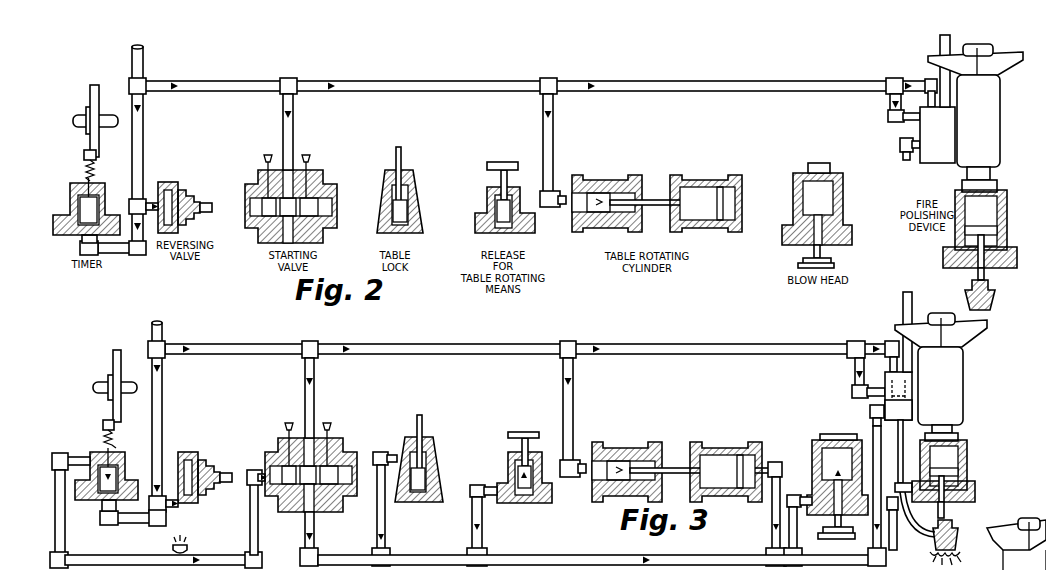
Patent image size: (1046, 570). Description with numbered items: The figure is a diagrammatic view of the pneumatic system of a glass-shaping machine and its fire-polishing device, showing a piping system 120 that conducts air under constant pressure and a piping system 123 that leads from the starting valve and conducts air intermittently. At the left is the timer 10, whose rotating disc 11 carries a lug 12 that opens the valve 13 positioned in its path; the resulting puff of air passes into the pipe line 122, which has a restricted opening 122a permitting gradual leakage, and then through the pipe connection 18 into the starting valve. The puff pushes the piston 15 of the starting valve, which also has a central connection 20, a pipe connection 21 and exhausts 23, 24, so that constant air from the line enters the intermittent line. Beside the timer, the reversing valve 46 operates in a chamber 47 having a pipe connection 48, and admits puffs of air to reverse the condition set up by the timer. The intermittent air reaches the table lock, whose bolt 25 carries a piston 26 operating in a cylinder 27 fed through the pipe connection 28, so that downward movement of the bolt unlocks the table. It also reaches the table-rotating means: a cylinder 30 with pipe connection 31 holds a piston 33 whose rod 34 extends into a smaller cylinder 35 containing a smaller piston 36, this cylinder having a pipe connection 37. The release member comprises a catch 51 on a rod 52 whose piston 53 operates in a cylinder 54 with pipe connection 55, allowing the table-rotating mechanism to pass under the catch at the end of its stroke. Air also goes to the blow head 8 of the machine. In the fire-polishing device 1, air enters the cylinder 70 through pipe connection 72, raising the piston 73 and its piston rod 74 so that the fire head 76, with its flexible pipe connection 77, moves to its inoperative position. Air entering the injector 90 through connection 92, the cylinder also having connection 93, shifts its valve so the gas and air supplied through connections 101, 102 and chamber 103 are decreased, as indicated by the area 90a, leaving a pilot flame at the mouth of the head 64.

In FIG. 2, the fire polishing device cylinder 1 is at (990, 128).
In FIG. 3, the fire polishing device cylinder 1 is at (955, 394).
In FIG. 2, the blow head 8 is at (790, 179).
In FIG. 3, the blow head 8 is at (813, 455).
In FIG. 2, the timer 10 is at (106, 118).
In FIG. 3, the timer 10 is at (125, 384).
In FIG. 2, the disc 11 is at (99, 92).
In FIG. 3, the disc 11 is at (121, 358).
In FIG. 2, the lug 12 is at (93, 86).
In FIG. 3, the lug 12 is at (105, 420).
In FIG. 2, the valve 13 is at (100, 186).
In FIG. 3, the valve 13 is at (96, 452).
In FIG. 2, the piston 15 is at (322, 182).
In FIG. 3, the piston 15 is at (345, 445).
In FIG. 3, the pipe connection 18 is at (251, 470).
In FIG. 2, the connection 20 is at (291, 160).
In FIG. 3, the connection 20 is at (314, 420).
In FIG. 3, the pipe connection 21 is at (300, 525).
In FIG. 2, the exhaust 23 is at (266, 157).
In FIG. 3, the exhaust 23 is at (287, 427).
In FIG. 2, the exhaust 24 is at (310, 160).
In FIG. 3, the exhaust 24 is at (331, 425).
In FIG. 2, the bolt 25 is at (402, 160).
In FIG. 3, the bolt 25 is at (424, 430).
In FIG. 2, the piston 26 is at (411, 191).
In FIG. 3, the piston 26 is at (433, 462).
In FIG. 2, the cylinder 27 is at (410, 207).
In FIG. 3, the cylinder 27 is at (430, 480).
In FIG. 3, the pipe connection 28 is at (383, 452).
In FIG. 2, the cylinder 30 is at (695, 182).
In FIG. 3, the cylinder 30 is at (708, 450).
In FIG. 3, the pipe connection 31 is at (775, 462).
In FIG. 2, the piston 33 is at (720, 185).
In FIG. 3, the piston 33 is at (740, 453).
In FIG. 2, the rod 34 is at (650, 198).
In FIG. 3, the rod 34 is at (668, 466).
In FIG. 2, the cylinder 35 is at (612, 180).
In FIG. 3, the cylinder 35 is at (627, 448).
In FIG. 2, the piston 36 is at (599, 192).
In FIG. 3, the piston 36 is at (618, 460).
In FIG. 2, the pipe connection 37 is at (550, 185).
In FIG. 3, the pipe connection 37 is at (575, 450).
In FIG. 2, the reversing valve 46 is at (205, 203).
In FIG. 3, the reversing valve 46 is at (225, 473).
In FIG. 2, the chamber 47 is at (170, 182).
In FIG. 3, the chamber 47 is at (190, 452).
In FIG. 2, the pipe connection 48 is at (151, 202).
In FIG. 3, the pipe connection 48 is at (170, 498).
In FIG. 2, the catch 51 is at (498, 163).
In FIG. 3, the catch 51 is at (526, 433).
In FIG. 2, the rod 52 is at (512, 168).
In FIG. 3, the rod 52 is at (535, 438).
In FIG. 2, the piston 53 is at (488, 196).
In FIG. 3, the piston 53 is at (510, 465).
In FIG. 2, the cylinder 54 is at (513, 196).
In FIG. 3, the cylinder 54 is at (535, 470).
In FIG. 3, the pipe connection 55 is at (485, 497).
In FIG. 2, the flared head 64 is at (993, 60).
In FIG. 3, the flared head 64 is at (968, 338).
In FIG. 2, the cylinder 70 is at (1005, 196).
In FIG. 3, the cylinder 70 is at (967, 447).
In FIG. 3, the pipe connection 72 is at (905, 483).
In FIG. 2, the piston 73 is at (992, 232).
In FIG. 3, the piston 73 is at (955, 472).
In FIG. 2, the piston rod 74 is at (987, 275).
In FIG. 3, the piston rod 74 is at (946, 510).
In FIG. 2, the fire head 76 is at (995, 292).
In FIG. 3, the fire head 76 is at (955, 528).
In FIG. 3, the flexible pipe connection 77 is at (880, 440).
In FIG. 2, the injector 90 is at (945, 150).
In FIG. 3, the injector 90 is at (885, 402).
In FIG. 3, the area 90a is at (885, 385).
In FIG. 2, the pipe connection 92 is at (900, 146).
In FIG. 3, the pipe connection 92 is at (870, 408).
In FIG. 2, the pipe connection 93 is at (905, 118).
In FIG. 3, the pipe connection 93 is at (855, 362).
In FIG. 2, the pipe connection 101 is at (925, 80).
In FIG. 3, the pipe connection 101 is at (888, 341).
In FIG. 2, the pipe connection 102 is at (950, 44).
In FIG. 3, the pipe connection 102 is at (912, 318).
In FIG. 3, the chamber 103 is at (1008, 544).
In FIG. 2, the piping system 120 is at (143, 57).
In FIG. 3, the piping system 120 is at (448, 347).
In FIG. 3, the pipe line 122 is at (128, 556).
In FIG. 3, the restricted opening 122a is at (188, 545).
In FIG. 3, the piping system 123 is at (588, 554).